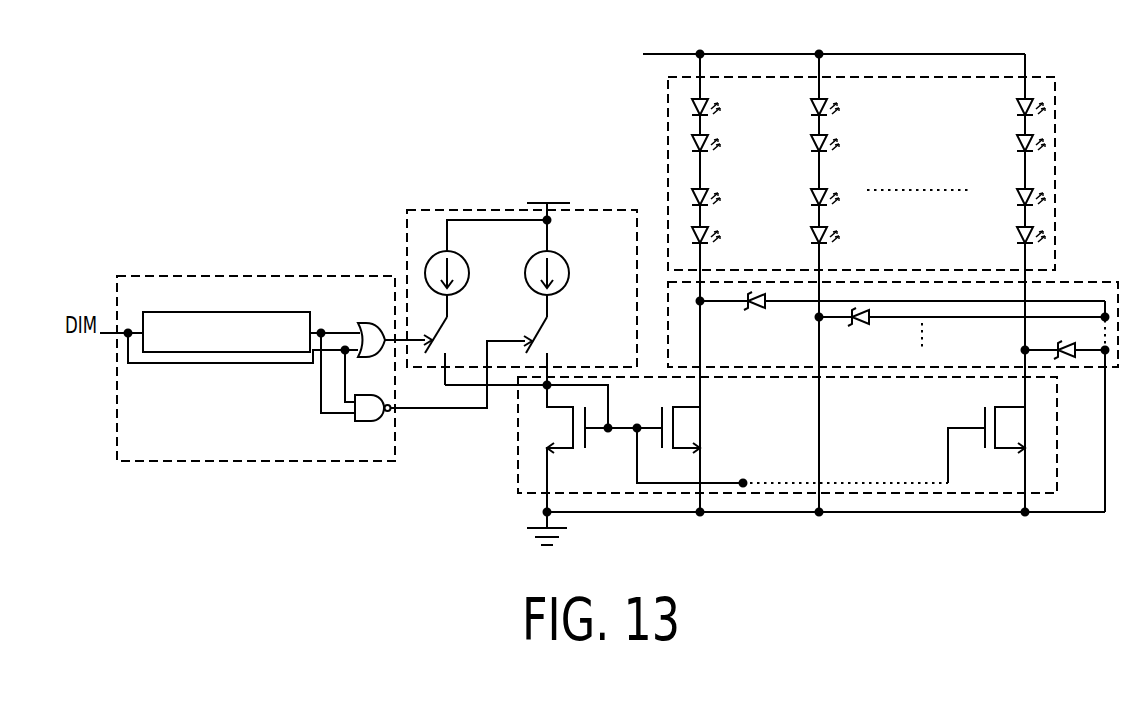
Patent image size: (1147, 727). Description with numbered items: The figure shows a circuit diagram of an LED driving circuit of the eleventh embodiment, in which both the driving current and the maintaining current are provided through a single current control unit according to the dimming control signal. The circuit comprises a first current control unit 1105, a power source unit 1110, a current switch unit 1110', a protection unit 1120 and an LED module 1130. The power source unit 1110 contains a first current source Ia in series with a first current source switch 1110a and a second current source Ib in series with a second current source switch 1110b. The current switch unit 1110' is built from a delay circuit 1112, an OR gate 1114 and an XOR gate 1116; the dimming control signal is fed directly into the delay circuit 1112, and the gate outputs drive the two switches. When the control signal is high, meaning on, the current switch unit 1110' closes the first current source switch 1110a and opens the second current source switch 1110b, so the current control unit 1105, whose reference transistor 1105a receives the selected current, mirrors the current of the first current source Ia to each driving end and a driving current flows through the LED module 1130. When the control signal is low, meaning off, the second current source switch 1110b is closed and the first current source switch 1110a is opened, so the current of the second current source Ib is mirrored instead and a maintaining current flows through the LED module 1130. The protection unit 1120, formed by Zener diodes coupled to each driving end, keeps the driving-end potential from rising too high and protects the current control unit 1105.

The current switch unit 1110' is at (324, 344).
The delay circuit 1112 is at (249, 353).
The OR gate 1114 is at (359, 326).
The XOR gate 1116 is at (355, 420).
The power source unit 1110 is at (499, 278).
The first current source Ia is at (468, 276).
The second current source Ib is at (569, 276).
The first current source switch 1110a is at (448, 336).
The second current source switch 1110b is at (544, 336).
The first current control unit 1105 is at (518, 475).
The reference transistor 1105a is at (588, 447).
The LED module 1130 is at (668, 165).
The protection unit 1120 is at (1075, 281).